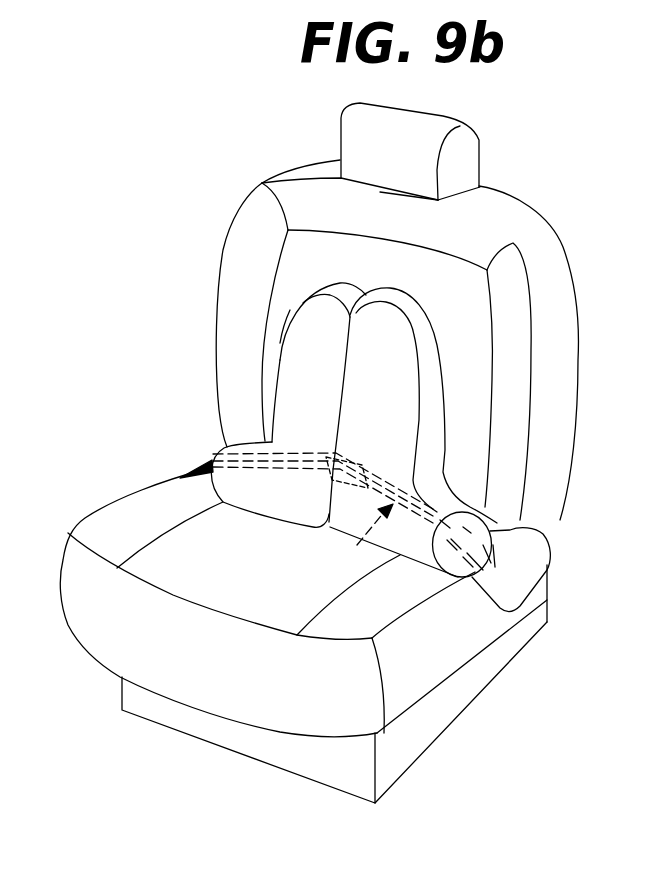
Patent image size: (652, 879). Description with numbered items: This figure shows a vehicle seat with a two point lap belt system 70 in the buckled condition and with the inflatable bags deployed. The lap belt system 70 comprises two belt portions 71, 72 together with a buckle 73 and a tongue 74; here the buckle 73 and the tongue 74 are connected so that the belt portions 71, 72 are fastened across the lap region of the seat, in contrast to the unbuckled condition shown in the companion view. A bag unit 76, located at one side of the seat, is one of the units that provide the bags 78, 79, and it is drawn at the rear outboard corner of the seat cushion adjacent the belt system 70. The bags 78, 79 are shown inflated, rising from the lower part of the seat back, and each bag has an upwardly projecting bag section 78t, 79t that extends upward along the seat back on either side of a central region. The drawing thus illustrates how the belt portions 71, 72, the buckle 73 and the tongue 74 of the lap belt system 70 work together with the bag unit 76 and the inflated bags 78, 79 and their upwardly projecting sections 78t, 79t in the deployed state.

The two point lap belt system 70 is at (349, 552).
The belt portion 71 is at (423, 495).
The belt portion 72 is at (218, 445).
The buckle 73 is at (360, 457).
The tongue 74 is at (328, 486).
The bag unit 76 is at (517, 572).
The bag 78 is at (318, 334).
The upwardly projecting bag section 78t is at (300, 355).
The bag 79 is at (394, 335).
The upwardly projecting bag section 79t is at (410, 366).